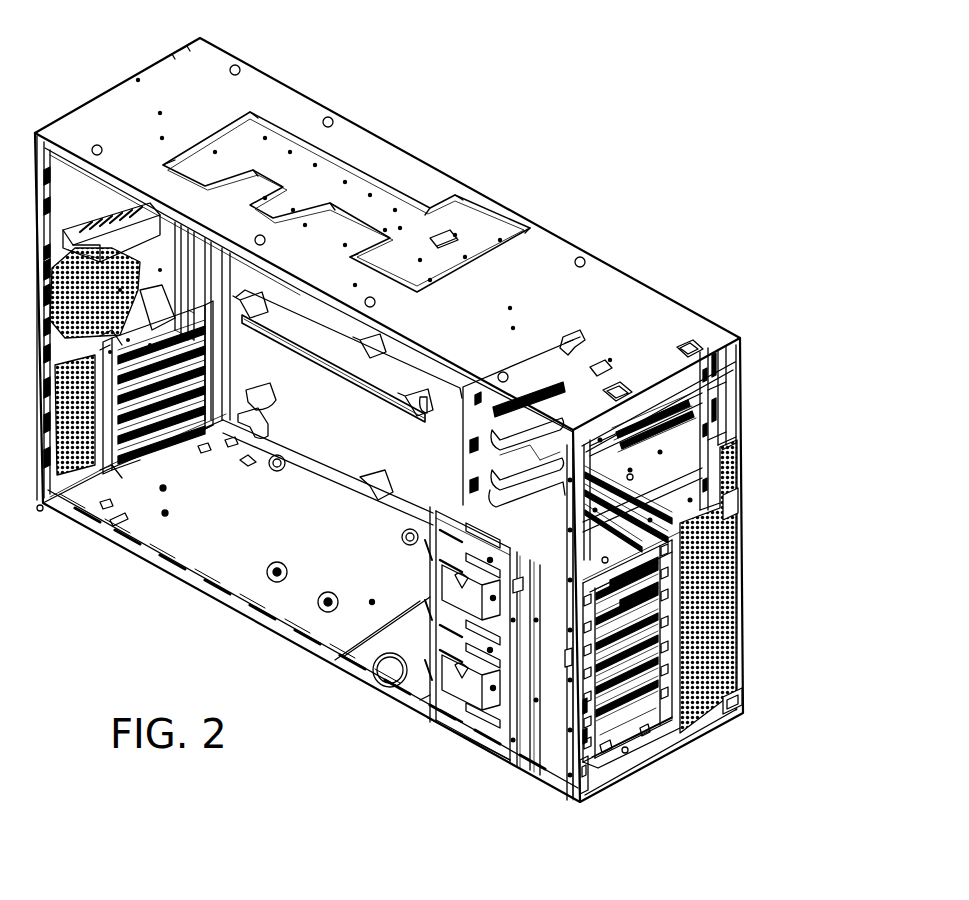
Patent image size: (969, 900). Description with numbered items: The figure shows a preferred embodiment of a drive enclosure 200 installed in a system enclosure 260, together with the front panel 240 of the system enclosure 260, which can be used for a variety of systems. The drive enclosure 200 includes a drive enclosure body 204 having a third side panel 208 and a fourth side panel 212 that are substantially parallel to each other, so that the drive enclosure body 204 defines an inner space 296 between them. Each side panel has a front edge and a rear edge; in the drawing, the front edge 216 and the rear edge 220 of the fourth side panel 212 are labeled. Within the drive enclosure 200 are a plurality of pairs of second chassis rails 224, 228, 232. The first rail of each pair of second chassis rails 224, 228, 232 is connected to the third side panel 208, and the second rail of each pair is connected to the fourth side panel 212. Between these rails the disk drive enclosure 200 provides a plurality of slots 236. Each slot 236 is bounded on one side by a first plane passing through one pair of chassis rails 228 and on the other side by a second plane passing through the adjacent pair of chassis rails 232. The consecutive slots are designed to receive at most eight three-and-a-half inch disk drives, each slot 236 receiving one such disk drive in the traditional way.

The drive enclosure 200 is at (430, 594).
The drive enclosure body 204 is at (453, 508).
The third side panel 208 is at (700, 722).
The fourth side panel 212 is at (557, 768).
The front edge 216 is at (590, 782).
The rear edge 220 is at (425, 697).
The second chassis rails 224 is at (663, 683).
The second chassis rails 228 is at (653, 562).
The second chassis rails 232 is at (743, 607).
The slots 236 is at (650, 578).
The front panel 240 is at (740, 418).
The system enclosure 260 is at (283, 85).
The inner space 296 is at (620, 742).